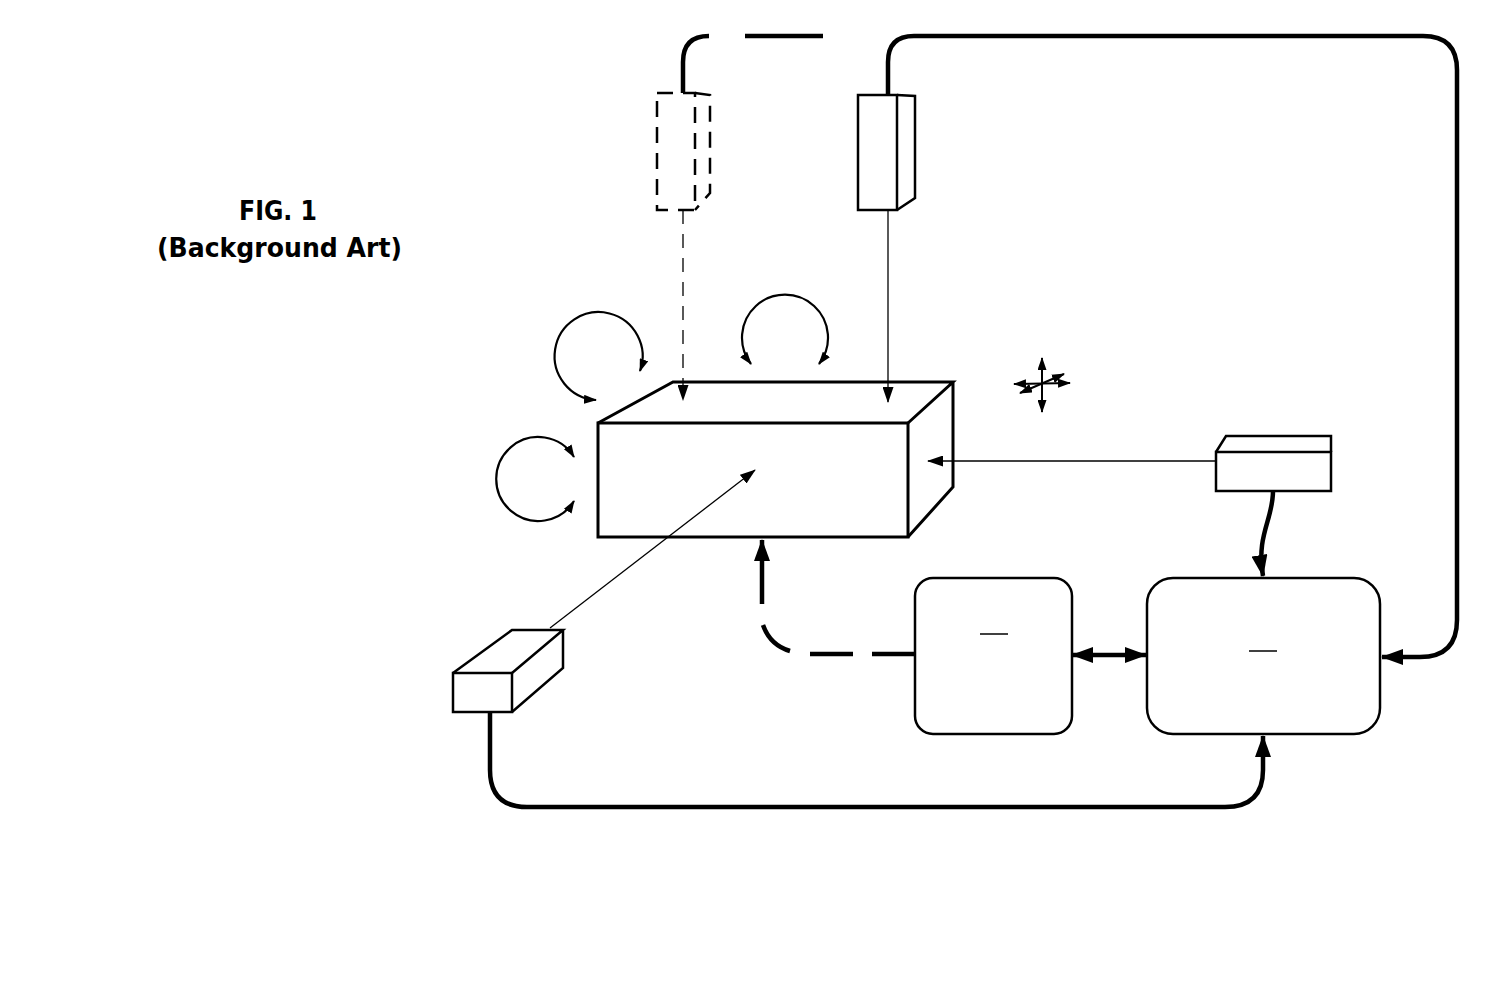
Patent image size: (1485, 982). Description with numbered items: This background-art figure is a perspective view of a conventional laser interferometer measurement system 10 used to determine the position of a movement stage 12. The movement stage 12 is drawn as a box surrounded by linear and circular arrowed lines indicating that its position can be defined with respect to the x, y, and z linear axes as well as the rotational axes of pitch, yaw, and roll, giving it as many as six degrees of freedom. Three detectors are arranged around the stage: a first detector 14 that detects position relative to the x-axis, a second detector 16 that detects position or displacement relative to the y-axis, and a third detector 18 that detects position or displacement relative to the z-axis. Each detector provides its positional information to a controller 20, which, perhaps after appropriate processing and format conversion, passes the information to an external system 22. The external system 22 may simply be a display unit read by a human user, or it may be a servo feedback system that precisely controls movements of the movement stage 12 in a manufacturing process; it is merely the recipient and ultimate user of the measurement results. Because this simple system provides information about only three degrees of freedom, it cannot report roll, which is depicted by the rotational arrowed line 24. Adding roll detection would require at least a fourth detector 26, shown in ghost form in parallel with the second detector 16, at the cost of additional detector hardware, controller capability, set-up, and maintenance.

The measurement system 10 is at (1221, 275).
The movement stage 12 is at (633, 452).
The first detector 14 is at (1273, 444).
The second detector 16 is at (858, 152).
The third detector 18 is at (453, 693).
The controller 20 is at (1263, 656).
The external system 22 is at (993, 656).
The rotational arrowed line 24 is at (798, 294).
The fourth detector 26 is at (657, 152).